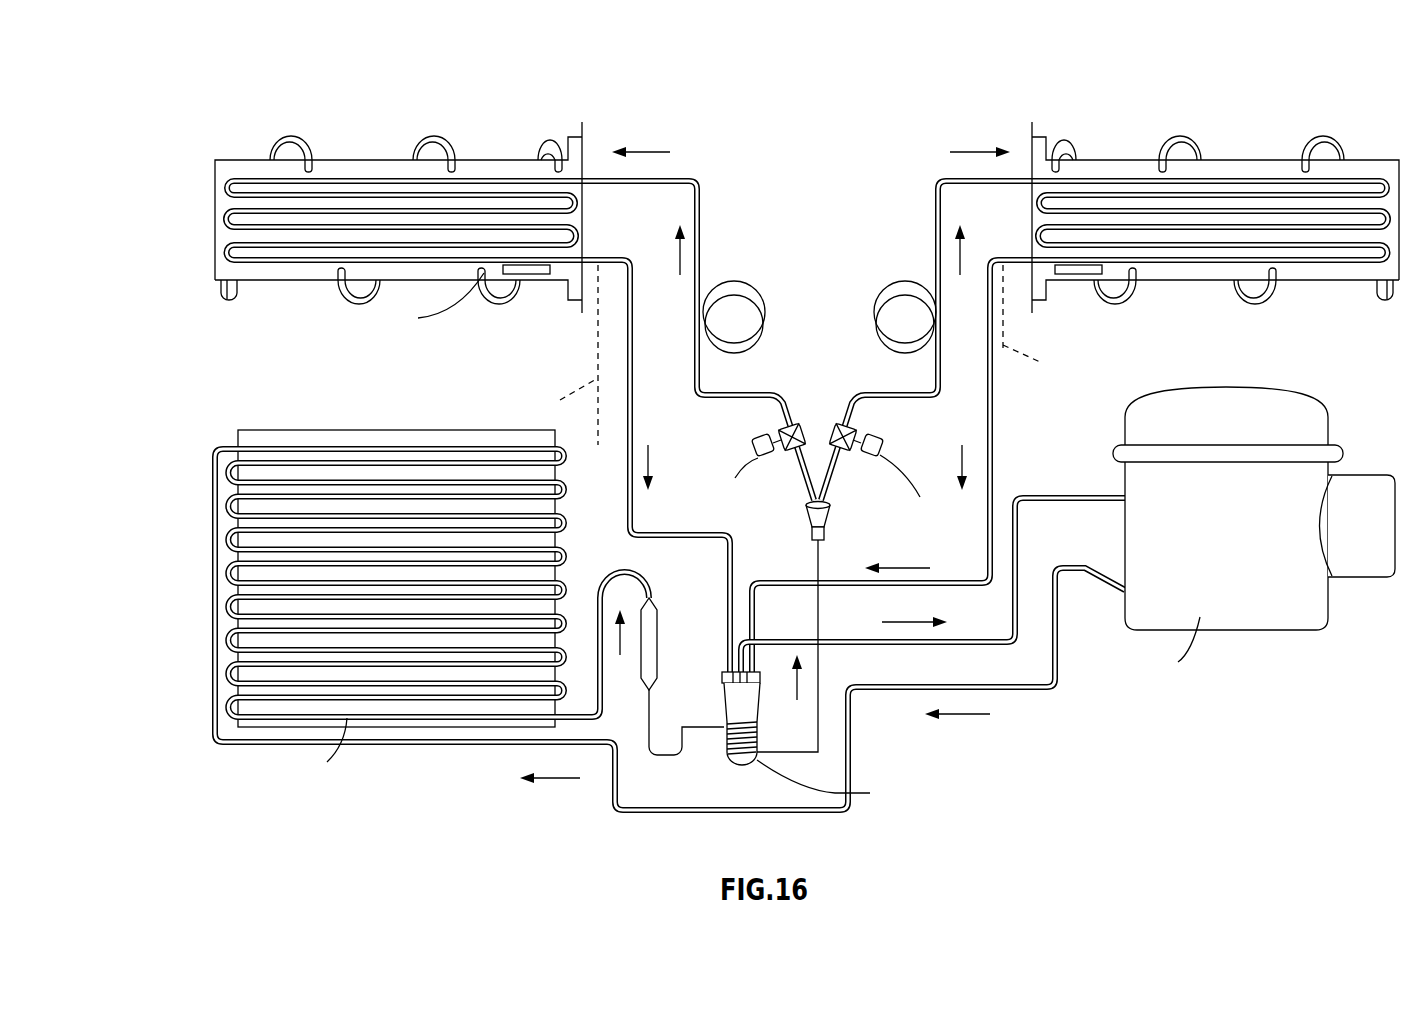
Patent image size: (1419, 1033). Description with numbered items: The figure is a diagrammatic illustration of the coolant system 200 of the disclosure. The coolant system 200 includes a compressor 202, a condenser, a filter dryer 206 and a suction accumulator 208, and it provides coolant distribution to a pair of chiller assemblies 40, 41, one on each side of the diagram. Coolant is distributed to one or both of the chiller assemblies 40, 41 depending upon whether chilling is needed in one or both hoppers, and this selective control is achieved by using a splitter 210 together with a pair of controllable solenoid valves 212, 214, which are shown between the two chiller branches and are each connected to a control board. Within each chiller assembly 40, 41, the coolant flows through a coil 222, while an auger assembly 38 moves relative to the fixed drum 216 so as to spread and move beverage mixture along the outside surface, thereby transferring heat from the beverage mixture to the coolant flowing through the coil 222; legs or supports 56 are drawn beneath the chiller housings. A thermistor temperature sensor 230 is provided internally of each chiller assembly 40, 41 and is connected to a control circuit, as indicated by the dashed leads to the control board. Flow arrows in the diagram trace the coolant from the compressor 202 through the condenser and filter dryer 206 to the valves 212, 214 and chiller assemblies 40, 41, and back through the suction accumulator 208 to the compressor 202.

The coolant system 200 is at (764, 423).
The coil 222 is at (246, 176).
The auger assembly 38 is at (294, 135).
The chiller assembly 40 is at (391, 203).
The second evaporator 41 is at (1237, 152).
The fixed drum 216 is at (466, 158).
The evaporator housing leg 56 is at (222, 267).
The thermistor temperature sensor 230 is at (545, 273).
The controllable solenoid valve 212 is at (770, 432).
The controllable solenoid valve 214 is at (868, 432).
The splitter 210 is at (808, 525).
The filter dryer 206 is at (659, 638).
The suction accumulator 208 is at (724, 695).
The compressor 202 is at (1308, 613).